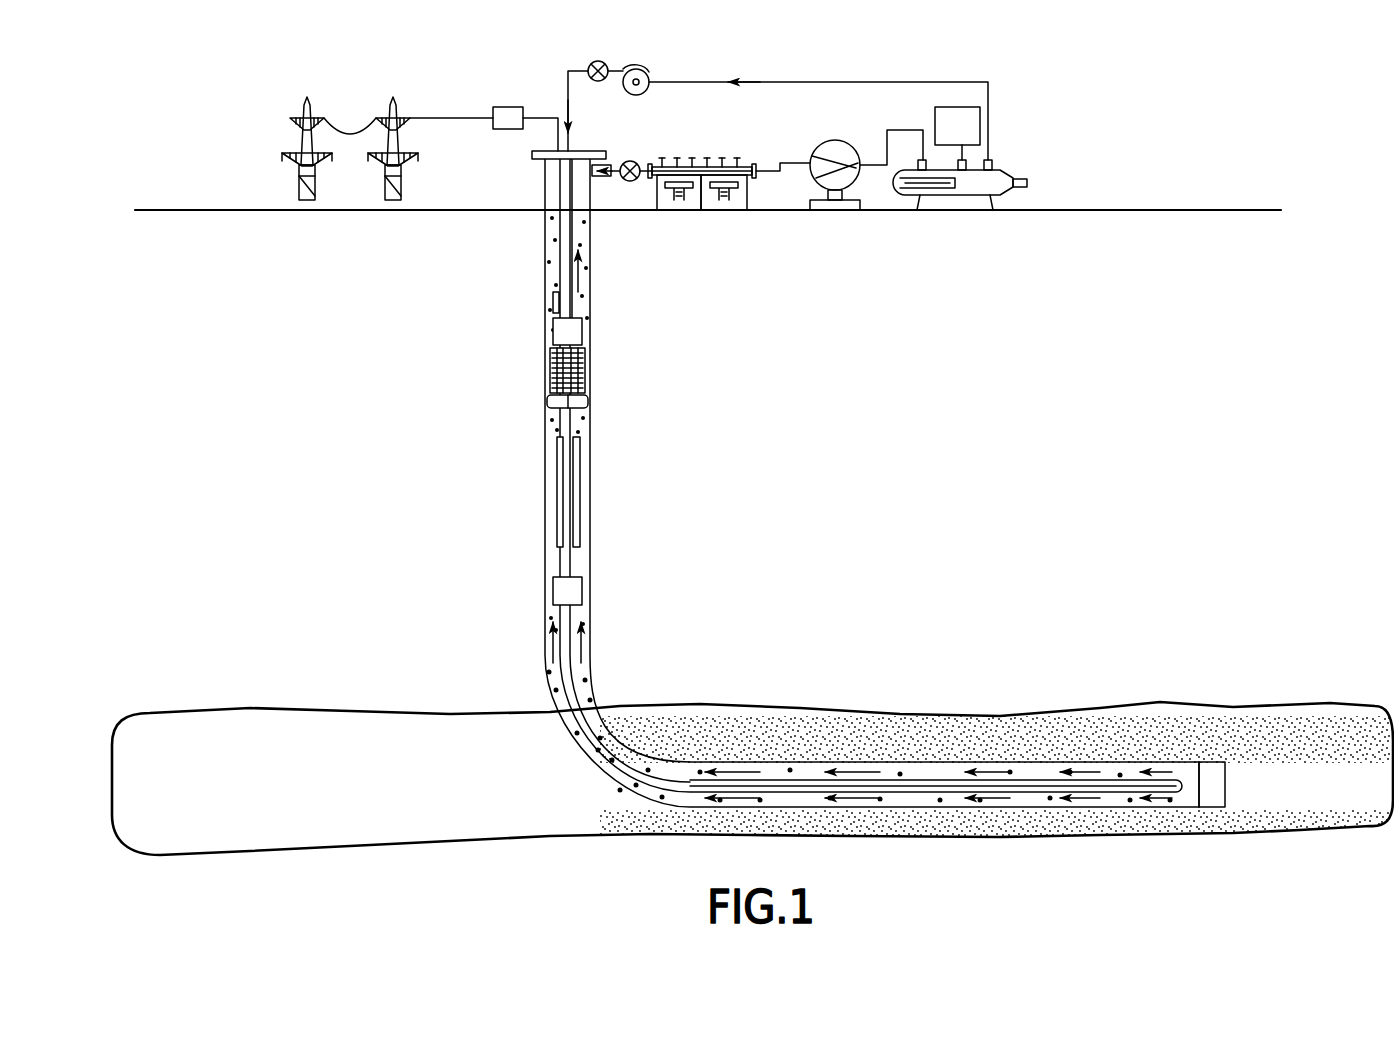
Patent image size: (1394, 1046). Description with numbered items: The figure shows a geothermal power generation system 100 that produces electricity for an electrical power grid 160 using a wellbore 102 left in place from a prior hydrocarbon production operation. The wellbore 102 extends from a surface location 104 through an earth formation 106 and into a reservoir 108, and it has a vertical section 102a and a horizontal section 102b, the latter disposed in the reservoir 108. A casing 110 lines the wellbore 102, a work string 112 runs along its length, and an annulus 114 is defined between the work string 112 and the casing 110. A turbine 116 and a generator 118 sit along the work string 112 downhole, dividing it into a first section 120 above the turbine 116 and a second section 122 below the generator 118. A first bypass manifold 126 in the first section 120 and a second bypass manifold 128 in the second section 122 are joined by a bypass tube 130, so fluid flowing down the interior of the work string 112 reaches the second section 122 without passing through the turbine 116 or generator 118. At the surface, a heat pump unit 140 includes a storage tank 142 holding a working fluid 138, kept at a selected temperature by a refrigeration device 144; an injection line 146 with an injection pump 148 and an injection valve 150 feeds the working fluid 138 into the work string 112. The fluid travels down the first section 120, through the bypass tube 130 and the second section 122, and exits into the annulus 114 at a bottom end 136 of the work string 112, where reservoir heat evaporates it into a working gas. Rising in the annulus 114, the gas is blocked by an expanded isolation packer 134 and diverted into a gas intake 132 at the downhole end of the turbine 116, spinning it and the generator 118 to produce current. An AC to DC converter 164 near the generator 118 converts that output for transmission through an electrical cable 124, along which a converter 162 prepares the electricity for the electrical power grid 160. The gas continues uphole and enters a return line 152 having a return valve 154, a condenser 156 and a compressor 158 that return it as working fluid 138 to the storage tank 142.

The geothermal power generation system 100 is at (1312, 200).
The wellbore 102 is at (810, 483).
The vertical section 102a is at (517, 430).
The horizontal section 102b is at (998, 742).
The surface location 104 is at (200, 210).
The earth formation 106 is at (920, 440).
The reservoir 108 is at (1360, 788).
The casing 110 is at (592, 568).
The work string 112 is at (591, 678).
The annulus 114 is at (582, 222).
The turbine 116 is at (568, 372).
The generator 118 is at (580, 518).
The first section 120 is at (530, 228).
The second section 122 is at (522, 664).
The electrical cable 124 is at (548, 277).
The first bypass manifold 126 is at (553, 332).
The second bypass manifold 128 is at (575, 584).
The bypass tube 130 is at (576, 464).
The gas intake 132 is at (584, 422).
The isolation packer 134 is at (586, 398).
The bottom end 136 is at (1240, 770).
The working fluid 138 is at (968, 196).
The heat pump unit 140 is at (1097, 120).
The storage tank 142 is at (1010, 170).
The refrigeration device 144 is at (983, 118).
The injection line 146 is at (852, 82).
The injection pump 148 is at (646, 70).
The injection valve 150 is at (594, 62).
The return line 152 is at (772, 180).
The return valve 154 is at (640, 165).
The condenser 156 is at (725, 164).
The compressor 158 is at (815, 150).
The electrical power grid 160 is at (390, 108).
The converter 162 is at (505, 107).
The AC to DC converter 164 is at (553, 302).